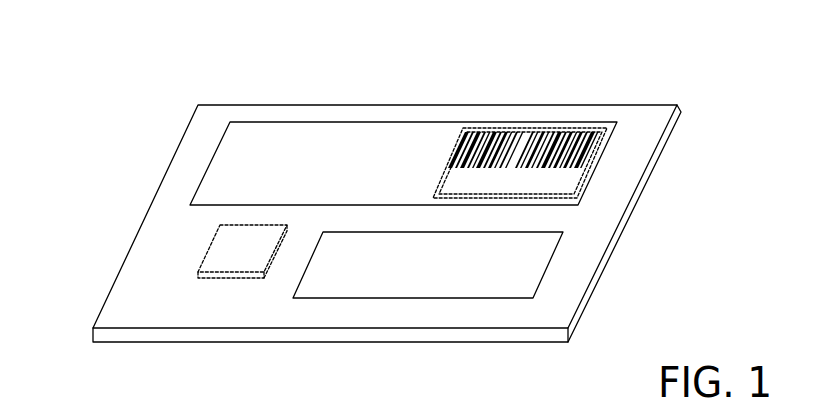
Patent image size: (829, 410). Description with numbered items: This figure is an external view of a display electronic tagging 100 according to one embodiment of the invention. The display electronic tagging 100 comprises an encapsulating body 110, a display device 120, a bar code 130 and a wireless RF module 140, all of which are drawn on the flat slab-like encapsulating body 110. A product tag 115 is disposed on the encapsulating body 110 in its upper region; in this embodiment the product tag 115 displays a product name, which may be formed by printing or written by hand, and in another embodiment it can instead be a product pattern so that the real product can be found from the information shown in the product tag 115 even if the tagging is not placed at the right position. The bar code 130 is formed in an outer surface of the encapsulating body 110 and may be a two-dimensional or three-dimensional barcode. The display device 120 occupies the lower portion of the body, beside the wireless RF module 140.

The display electronic tagging 100 is at (403, 78).
The encapsulating body 110 is at (676, 116).
The product tag 115 is at (262, 123).
The display device 120 is at (440, 280).
The bar code 130 is at (508, 129).
The wireless RF module 140 is at (210, 248).